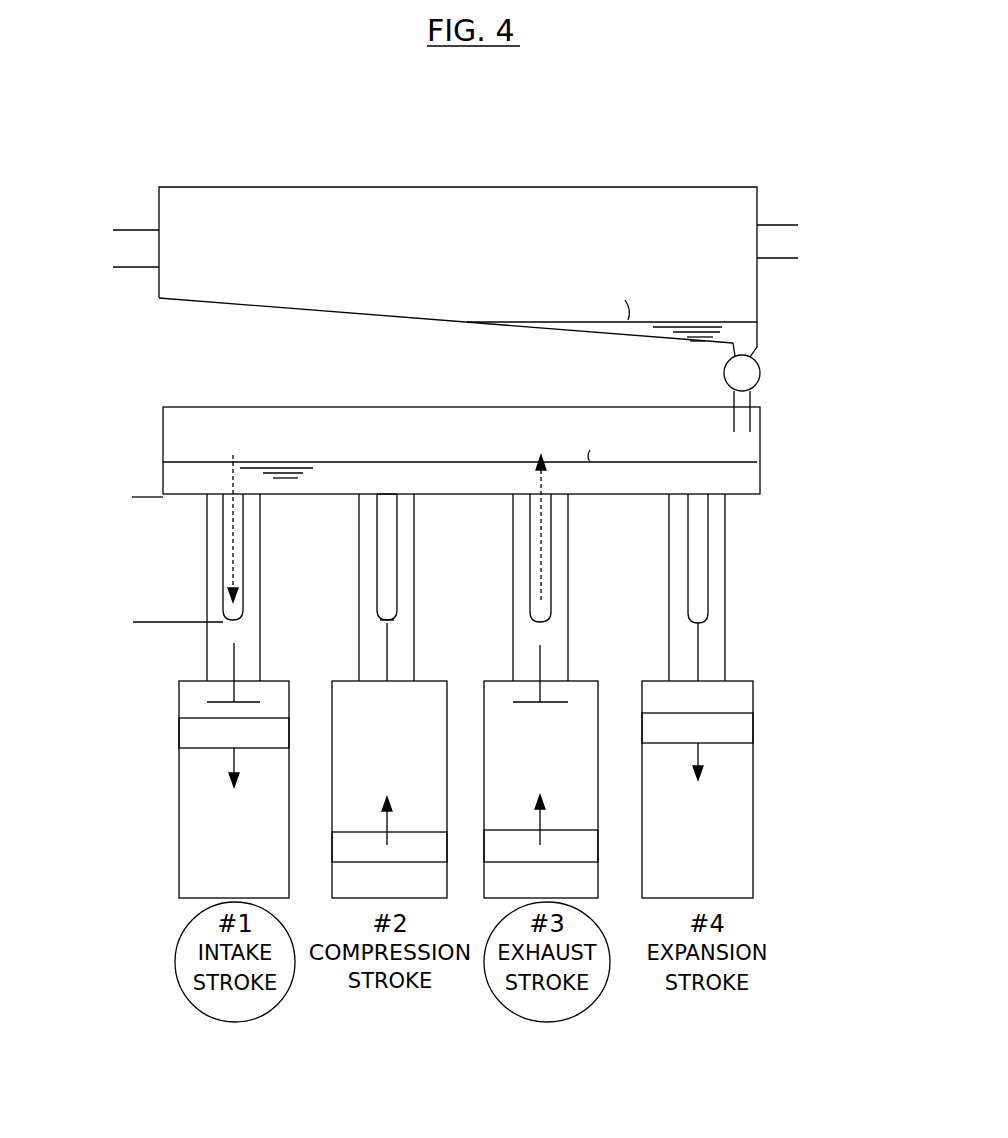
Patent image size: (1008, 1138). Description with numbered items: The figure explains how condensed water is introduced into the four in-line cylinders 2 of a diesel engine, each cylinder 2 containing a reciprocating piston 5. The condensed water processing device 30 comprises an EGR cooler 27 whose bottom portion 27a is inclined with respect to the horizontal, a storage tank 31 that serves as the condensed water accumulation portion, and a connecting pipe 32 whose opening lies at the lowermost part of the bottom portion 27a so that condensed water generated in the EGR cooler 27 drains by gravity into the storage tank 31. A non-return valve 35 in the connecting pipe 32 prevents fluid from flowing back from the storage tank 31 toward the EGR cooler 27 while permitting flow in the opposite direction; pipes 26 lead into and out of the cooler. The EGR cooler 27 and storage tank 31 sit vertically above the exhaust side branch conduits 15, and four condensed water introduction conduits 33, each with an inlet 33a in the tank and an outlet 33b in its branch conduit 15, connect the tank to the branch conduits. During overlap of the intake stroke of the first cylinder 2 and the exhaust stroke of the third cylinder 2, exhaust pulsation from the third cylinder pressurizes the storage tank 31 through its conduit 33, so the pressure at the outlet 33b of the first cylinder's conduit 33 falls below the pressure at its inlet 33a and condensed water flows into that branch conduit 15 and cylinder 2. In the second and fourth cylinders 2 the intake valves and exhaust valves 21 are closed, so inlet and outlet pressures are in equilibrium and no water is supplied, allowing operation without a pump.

The cylinder 2 is at (182, 830).
The piston 5 is at (180, 732).
The exhaust side branch conduit 15 is at (207, 548).
The exhaust valve 21 is at (232, 692).
The cooling water pipe 26 is at (130, 228).
The EGR cooler 27 is at (480, 195).
The bottom portion 27a is at (358, 320).
The condensed water processing device 30 is at (802, 325).
The storage tank 31 is at (762, 455).
The connecting pipe 32 is at (746, 407).
The condensed water introduction conduit 33 is at (378, 550).
The inlet 33a is at (395, 500).
The outlet 33b is at (387, 612).
The non-return valve 35 is at (745, 374).